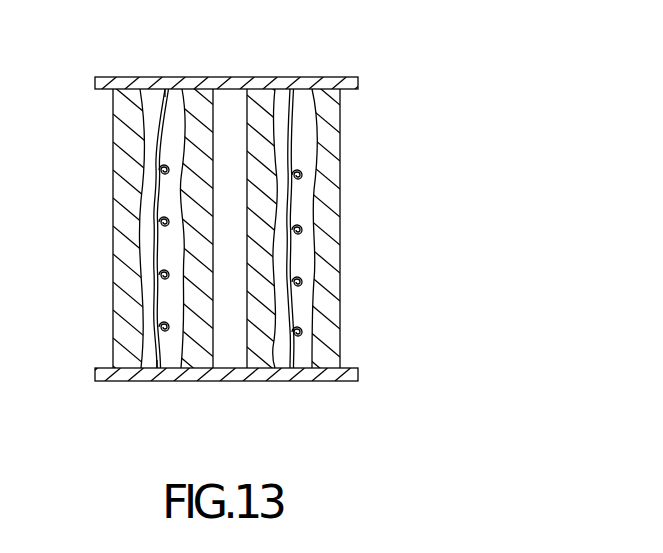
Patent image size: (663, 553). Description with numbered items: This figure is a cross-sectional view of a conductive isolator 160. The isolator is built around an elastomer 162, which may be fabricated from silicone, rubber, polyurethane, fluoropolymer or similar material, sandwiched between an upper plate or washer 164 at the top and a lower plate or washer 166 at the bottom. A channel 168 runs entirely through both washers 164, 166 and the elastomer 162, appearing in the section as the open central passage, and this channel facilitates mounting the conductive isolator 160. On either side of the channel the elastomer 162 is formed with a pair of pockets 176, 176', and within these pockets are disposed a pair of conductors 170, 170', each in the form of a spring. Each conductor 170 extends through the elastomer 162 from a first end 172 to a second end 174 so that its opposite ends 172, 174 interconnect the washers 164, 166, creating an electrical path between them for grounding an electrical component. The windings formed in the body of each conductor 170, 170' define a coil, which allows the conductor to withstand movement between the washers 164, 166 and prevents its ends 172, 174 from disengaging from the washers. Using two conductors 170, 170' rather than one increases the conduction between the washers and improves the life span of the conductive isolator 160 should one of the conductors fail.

The conductive isolator 160 is at (415, 209).
The elastomer 162 is at (332, 188).
The upper plate or washer 164 is at (358, 76).
The lower plate or washer 166 is at (338, 382).
The channel 168 is at (230, 97).
The conductor 170 is at (115, 228).
The conductor 170' is at (345, 228).
The first end 172 is at (166, 94).
The second end 174 is at (157, 368).
The pocket 176 is at (113, 227).
The pocket 176' is at (345, 228).